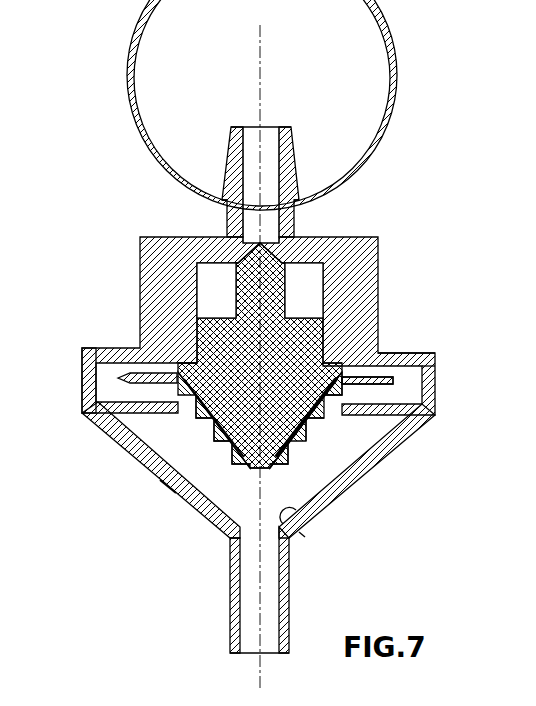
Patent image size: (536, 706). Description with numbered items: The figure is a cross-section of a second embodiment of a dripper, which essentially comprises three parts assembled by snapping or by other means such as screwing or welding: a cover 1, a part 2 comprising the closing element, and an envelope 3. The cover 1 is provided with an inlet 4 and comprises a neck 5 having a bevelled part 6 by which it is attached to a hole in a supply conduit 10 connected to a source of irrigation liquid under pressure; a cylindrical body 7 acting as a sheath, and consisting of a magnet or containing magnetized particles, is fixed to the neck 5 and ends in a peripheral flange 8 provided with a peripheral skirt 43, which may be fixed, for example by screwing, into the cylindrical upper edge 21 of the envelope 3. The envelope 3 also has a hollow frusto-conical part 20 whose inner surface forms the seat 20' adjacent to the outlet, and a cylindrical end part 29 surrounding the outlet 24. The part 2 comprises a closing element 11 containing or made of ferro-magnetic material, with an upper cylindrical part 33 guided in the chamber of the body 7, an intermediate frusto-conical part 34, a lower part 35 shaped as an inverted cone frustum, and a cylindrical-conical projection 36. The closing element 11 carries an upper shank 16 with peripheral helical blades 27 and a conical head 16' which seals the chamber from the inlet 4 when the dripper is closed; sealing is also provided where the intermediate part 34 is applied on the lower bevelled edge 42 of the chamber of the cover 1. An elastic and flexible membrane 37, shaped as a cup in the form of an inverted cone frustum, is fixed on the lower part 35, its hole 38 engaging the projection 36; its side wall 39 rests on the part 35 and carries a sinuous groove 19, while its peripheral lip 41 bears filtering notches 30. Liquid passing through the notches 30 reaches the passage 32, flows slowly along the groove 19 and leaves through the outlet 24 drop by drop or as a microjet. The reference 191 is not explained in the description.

The cover 1 is at (380, 312).
The part comprising the closing element 2 is at (386, 474).
The envelope 3 is at (137, 539).
The inlet 4 is at (270, 138).
The neck 5 is at (296, 219).
The bevelled part 6 is at (300, 181).
The cylindrical body 7 is at (380, 252).
The peripheral flange 8 is at (397, 357).
The supply tube or conduit 10 is at (392, 68).
The closing element 11 is at (212, 426).
The upper shank 16 is at (195, 232).
The conical head 16' is at (314, 241).
The sinuous groove 19 is at (317, 437).
The opening in skirt 191 is at (170, 488).
The hollow frusto-conical part 20 is at (331, 517).
The seat 20' is at (327, 541).
The cylindrical upper edge 21 is at (98, 372).
The outlet 24 is at (248, 648).
The peripheral helical blades 27 is at (308, 296).
The cylindrical end part 29 is at (289, 591).
The filtering notches 30 is at (394, 383).
The passage 32 is at (350, 434).
The upper cylindrical part 33 is at (218, 330).
The intermediate frusto-conical part 34 is at (183, 363).
The lower part 35 is at (368, 414).
The cylindrical-conical projection 36 is at (246, 466).
The elastic and flexible membrane 37 is at (180, 392).
The hole 38 is at (257, 472).
The side wall 39 is at (197, 410).
The peripheral lip or edge 41 is at (427, 364).
The lower bevelled edge 42 is at (328, 366).
The peripheral skirt 43 is at (397, 380).